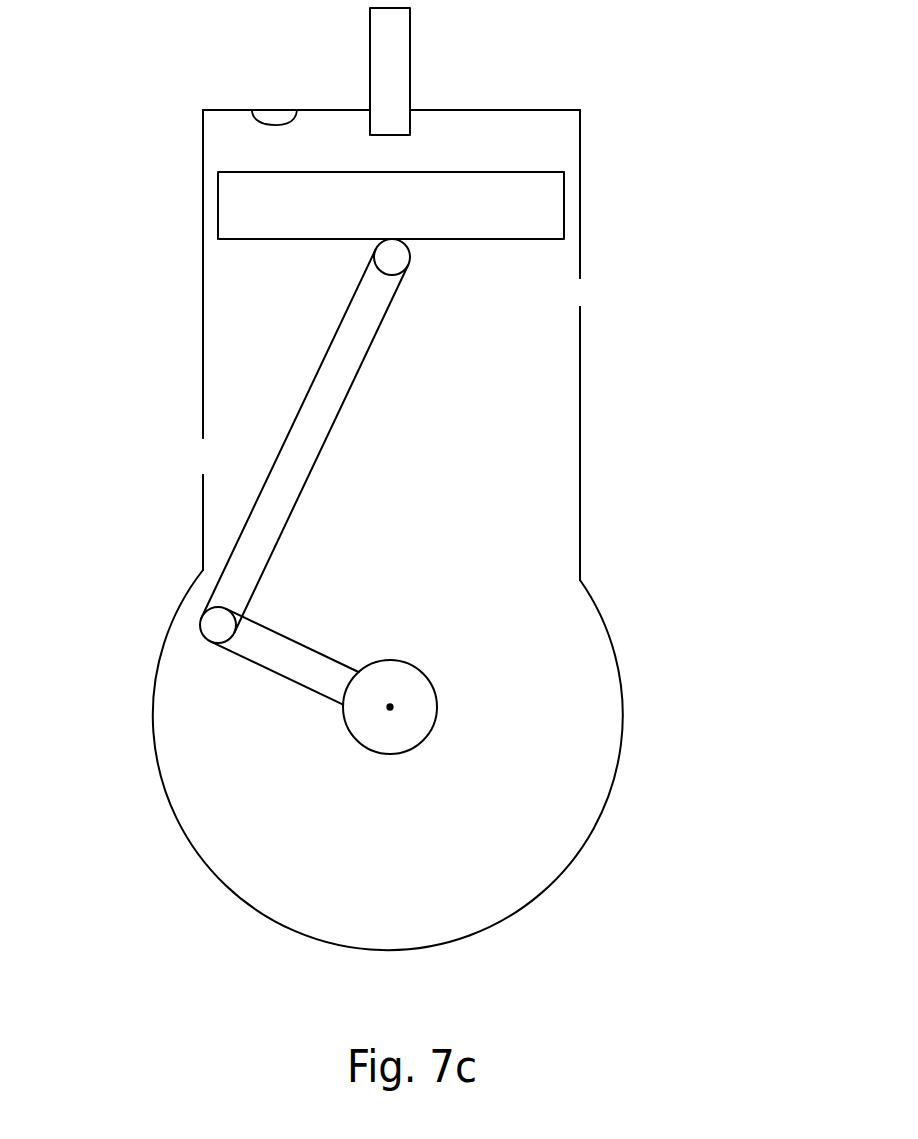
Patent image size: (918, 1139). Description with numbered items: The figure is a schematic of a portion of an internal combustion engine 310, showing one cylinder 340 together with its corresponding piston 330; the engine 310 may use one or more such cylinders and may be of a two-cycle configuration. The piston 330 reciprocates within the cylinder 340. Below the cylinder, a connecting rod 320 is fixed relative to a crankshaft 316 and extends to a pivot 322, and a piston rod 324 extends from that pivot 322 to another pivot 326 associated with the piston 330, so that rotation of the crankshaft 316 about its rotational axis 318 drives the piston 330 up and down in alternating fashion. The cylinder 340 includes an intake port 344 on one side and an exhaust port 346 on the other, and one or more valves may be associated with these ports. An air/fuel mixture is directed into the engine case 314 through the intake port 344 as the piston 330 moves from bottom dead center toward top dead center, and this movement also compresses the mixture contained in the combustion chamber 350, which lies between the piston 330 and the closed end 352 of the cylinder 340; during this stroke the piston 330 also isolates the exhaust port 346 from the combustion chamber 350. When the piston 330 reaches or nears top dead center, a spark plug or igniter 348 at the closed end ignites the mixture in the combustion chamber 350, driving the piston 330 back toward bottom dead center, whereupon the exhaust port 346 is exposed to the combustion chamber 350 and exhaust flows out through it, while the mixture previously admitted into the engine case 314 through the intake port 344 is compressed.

The internal combustion engine 310 is at (419, 479).
The engine case 314 is at (623, 706).
The crankshaft 316 is at (433, 725).
The rotational axis 318 is at (390, 704).
The connecting rod 320 is at (288, 638).
The pivot 322 is at (215, 643).
The piston rod 324 is at (317, 460).
The pivot 326 is at (410, 258).
The piston 330 is at (391, 205).
The cylinder 340 is at (580, 427).
The intake port 344 is at (203, 460).
The exhaust port 346 is at (582, 290).
The spark plug or igniter 348 is at (410, 43).
The combustion chamber 350 is at (490, 135).
The closed end 352 is at (297, 110).